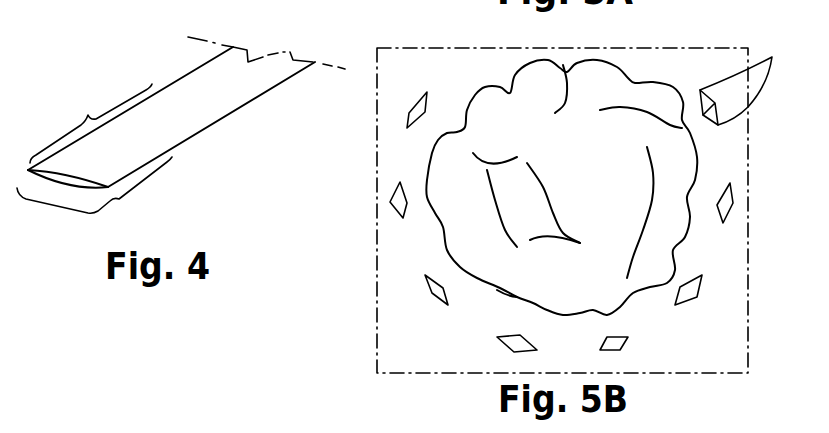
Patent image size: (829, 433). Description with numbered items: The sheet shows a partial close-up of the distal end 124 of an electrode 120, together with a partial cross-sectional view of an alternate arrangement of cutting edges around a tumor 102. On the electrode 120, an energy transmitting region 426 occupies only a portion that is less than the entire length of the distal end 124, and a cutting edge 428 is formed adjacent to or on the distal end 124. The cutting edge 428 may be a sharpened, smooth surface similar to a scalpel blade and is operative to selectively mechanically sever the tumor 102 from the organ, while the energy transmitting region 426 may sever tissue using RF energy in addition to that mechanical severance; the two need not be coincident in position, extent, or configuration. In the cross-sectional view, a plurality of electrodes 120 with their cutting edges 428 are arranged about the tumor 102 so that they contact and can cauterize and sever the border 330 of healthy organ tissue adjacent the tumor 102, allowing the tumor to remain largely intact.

In FIG. 5B, the tumor 102 is at (606, 178).
In FIG. 4, the electrode 120 is at (135, 79).
In FIG. 5B, the electrode 120 is at (411, 111).
In FIG. 4, the distal end 124 is at (175, 210).
In FIG. 5B, the border 330 is at (695, 112).
In FIG. 4, the energy transmitting region 426 is at (91, 123).
In FIG. 4, the cutting edge 428 is at (94, 189).
In FIG. 5B, the cutting edge 428 is at (772, 57).